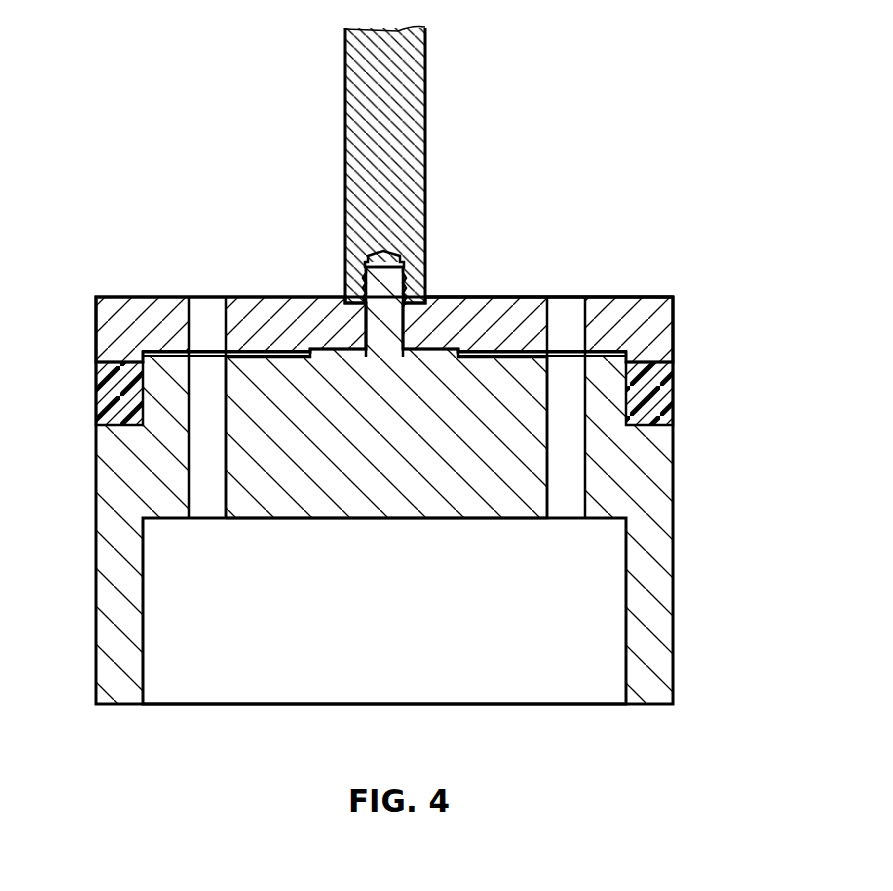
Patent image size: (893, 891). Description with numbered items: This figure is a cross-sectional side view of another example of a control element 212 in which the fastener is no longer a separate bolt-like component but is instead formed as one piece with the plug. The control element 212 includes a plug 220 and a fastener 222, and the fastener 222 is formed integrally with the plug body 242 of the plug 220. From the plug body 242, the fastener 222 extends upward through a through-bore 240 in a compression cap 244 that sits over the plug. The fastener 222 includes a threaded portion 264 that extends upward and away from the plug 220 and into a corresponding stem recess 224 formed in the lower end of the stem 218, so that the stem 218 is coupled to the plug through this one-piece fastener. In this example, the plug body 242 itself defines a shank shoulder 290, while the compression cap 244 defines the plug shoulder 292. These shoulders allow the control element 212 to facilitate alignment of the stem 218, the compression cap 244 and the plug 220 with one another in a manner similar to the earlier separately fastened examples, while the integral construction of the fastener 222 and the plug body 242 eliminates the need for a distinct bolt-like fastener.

The control element 212 is at (497, 110).
The stem 218 is at (373, 142).
The plug 220 is at (671, 322).
The fastener 222 is at (383, 288).
The stem recess 224 is at (403, 270).
The through-bore 240 is at (392, 320).
The plug body 242 is at (657, 552).
The compression cap 244 is at (110, 331).
The threaded portion 264 is at (305, 252).
The shank shoulder 290 is at (478, 297).
The plug shoulder 292 is at (368, 355).